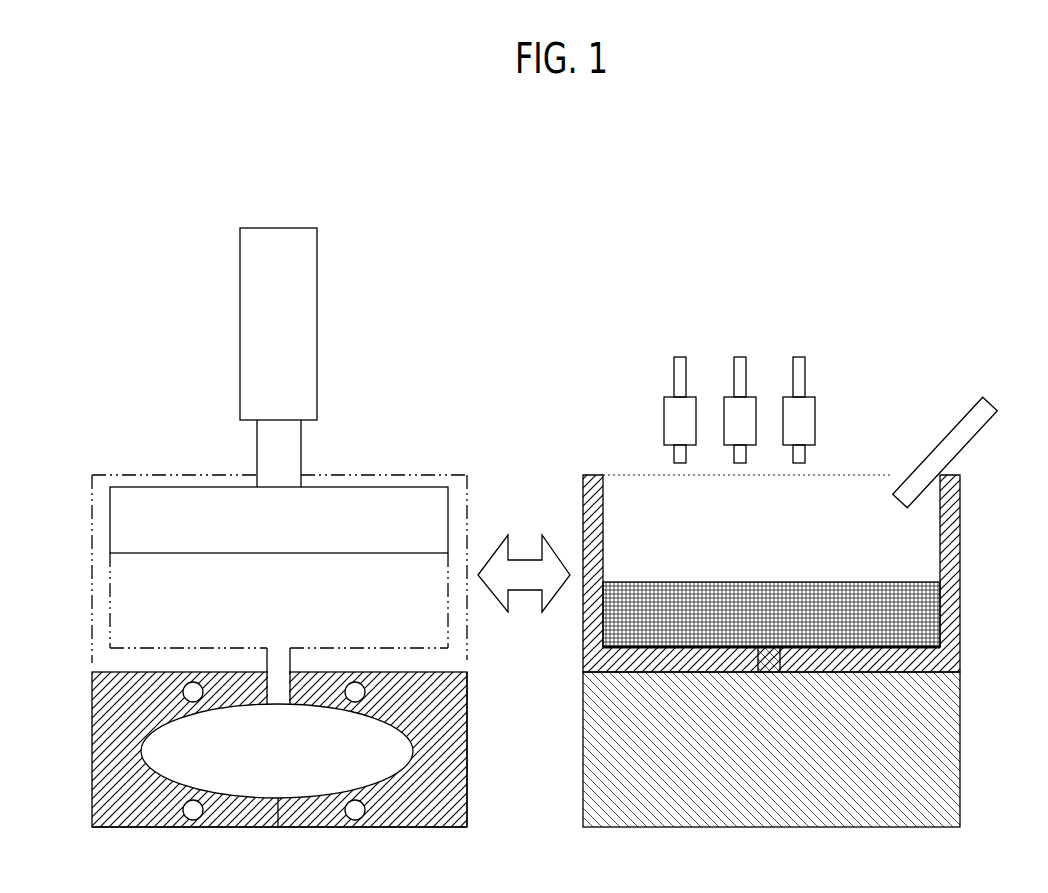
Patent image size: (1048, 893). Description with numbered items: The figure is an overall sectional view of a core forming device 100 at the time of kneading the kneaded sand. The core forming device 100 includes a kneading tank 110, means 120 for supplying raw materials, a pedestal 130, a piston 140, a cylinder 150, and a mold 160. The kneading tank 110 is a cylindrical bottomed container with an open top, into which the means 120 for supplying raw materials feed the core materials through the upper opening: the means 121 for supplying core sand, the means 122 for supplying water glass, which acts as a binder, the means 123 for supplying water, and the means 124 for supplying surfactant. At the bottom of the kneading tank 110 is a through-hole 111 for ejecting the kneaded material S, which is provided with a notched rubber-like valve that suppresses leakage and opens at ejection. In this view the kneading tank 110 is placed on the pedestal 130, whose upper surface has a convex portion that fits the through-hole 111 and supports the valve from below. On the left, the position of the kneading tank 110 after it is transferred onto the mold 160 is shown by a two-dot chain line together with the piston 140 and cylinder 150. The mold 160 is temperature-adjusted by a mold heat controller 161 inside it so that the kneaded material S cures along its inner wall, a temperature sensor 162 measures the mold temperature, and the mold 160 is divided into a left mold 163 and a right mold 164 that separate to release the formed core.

The core forming device 100 is at (585, 318).
The kneading tank 110 is at (962, 557).
The through-hole 111 is at (773, 643).
The means for supplying raw materials 120 is at (801, 527).
The means for supplying core sand 121 is at (965, 412).
The means for supplying water glass 122 is at (815, 445).
The means for supplying water 123 is at (755, 445).
The means for supplying surfactant 124 is at (695, 445).
The pedestal 130 is at (960, 727).
The piston 140 is at (385, 478).
The cylinder 150 is at (318, 310).
The mold 160 is at (303, 738).
The mold heat controller 161 is at (343, 670).
The temperature sensor 162 is at (337, 827).
The left mold 163 is at (138, 828).
The right mold 164 is at (468, 720).
The kneaded material S is at (683, 595).